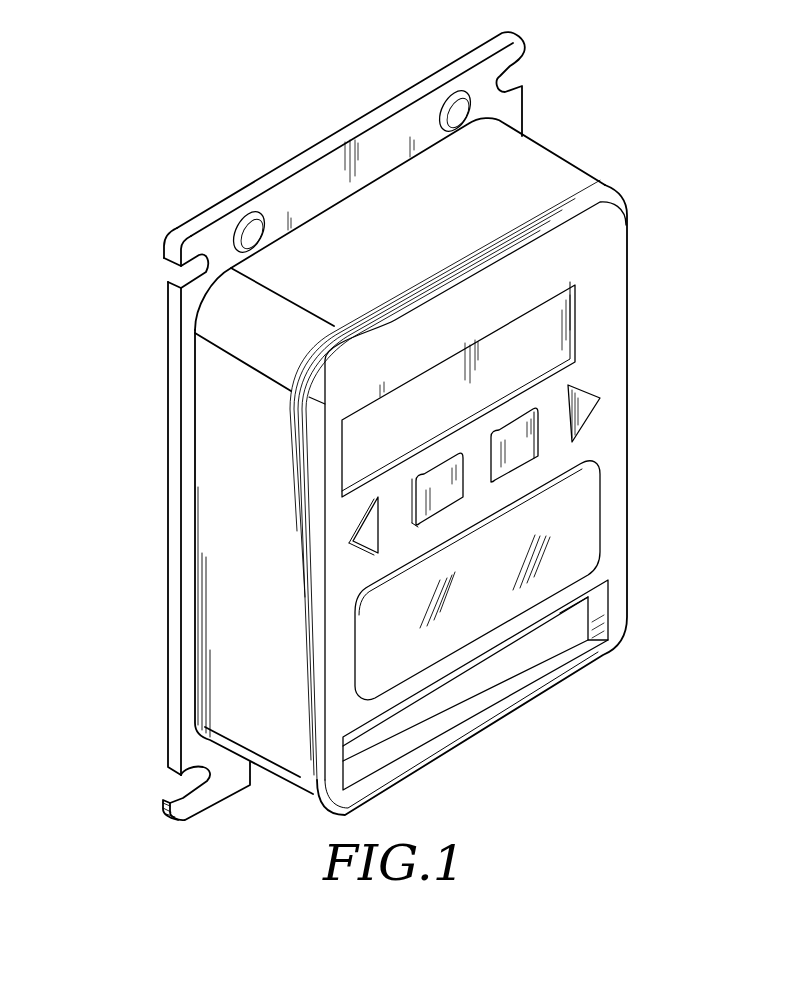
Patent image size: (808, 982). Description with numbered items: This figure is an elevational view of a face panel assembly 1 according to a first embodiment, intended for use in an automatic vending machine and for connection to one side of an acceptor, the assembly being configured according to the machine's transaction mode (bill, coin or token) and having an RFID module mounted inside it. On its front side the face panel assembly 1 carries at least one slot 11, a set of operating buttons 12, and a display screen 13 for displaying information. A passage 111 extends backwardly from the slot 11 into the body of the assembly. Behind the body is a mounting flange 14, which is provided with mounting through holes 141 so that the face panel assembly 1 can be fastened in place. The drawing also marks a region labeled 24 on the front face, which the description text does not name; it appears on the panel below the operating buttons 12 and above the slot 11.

The face panel assembly 1 is at (710, 385).
The slot 11 is at (480, 676).
The passage 111 is at (400, 713).
The operating buttons 12 is at (525, 442).
The display screen 13 is at (557, 333).
The mounting flange 14 is at (337, 138).
The mounting through holes 141 is at (266, 212).
The RFID area 24 is at (583, 508).